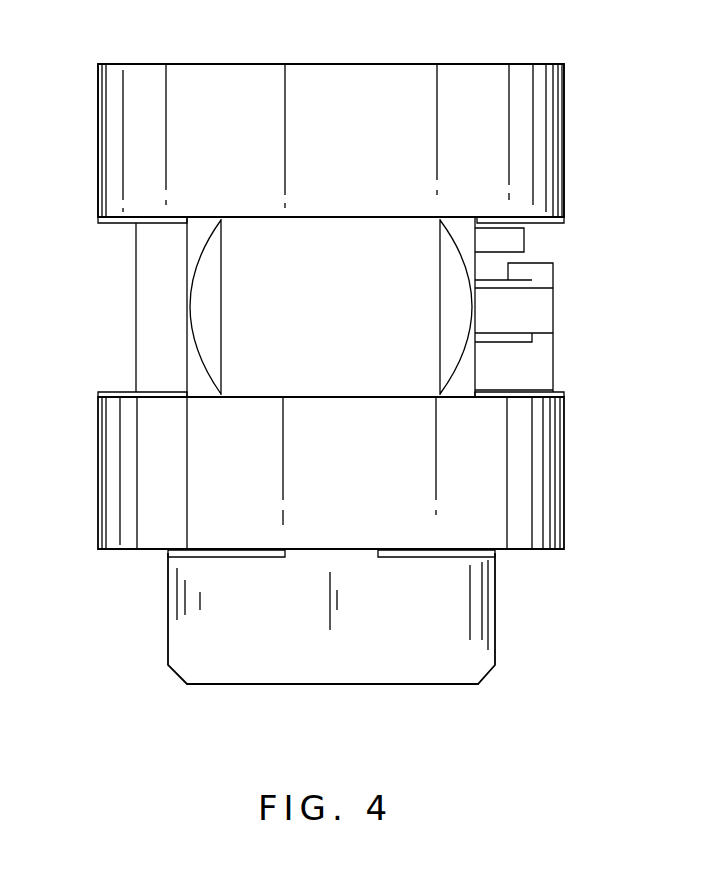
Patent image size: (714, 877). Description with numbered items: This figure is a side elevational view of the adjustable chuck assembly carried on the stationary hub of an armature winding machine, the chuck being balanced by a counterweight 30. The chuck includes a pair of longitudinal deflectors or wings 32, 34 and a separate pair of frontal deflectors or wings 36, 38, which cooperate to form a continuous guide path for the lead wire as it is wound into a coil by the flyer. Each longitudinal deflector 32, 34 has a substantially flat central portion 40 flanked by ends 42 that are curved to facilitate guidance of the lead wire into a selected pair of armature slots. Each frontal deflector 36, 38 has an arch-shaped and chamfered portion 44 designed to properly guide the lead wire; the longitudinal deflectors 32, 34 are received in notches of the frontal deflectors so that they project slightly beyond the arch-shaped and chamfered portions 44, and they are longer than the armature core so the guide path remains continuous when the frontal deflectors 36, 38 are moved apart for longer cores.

The counterweight 30 is at (237, 665).
The longitudinal deflector 32 is at (380, 64).
The longitudinal deflector 34 is at (357, 549).
The frontal deflector 36 is at (478, 357).
The frontal deflector 38 is at (187, 297).
The central portion 40 is at (302, 90).
The ends 42 is at (124, 152).
The arch-shaped and chamfered portion 44 is at (208, 316).